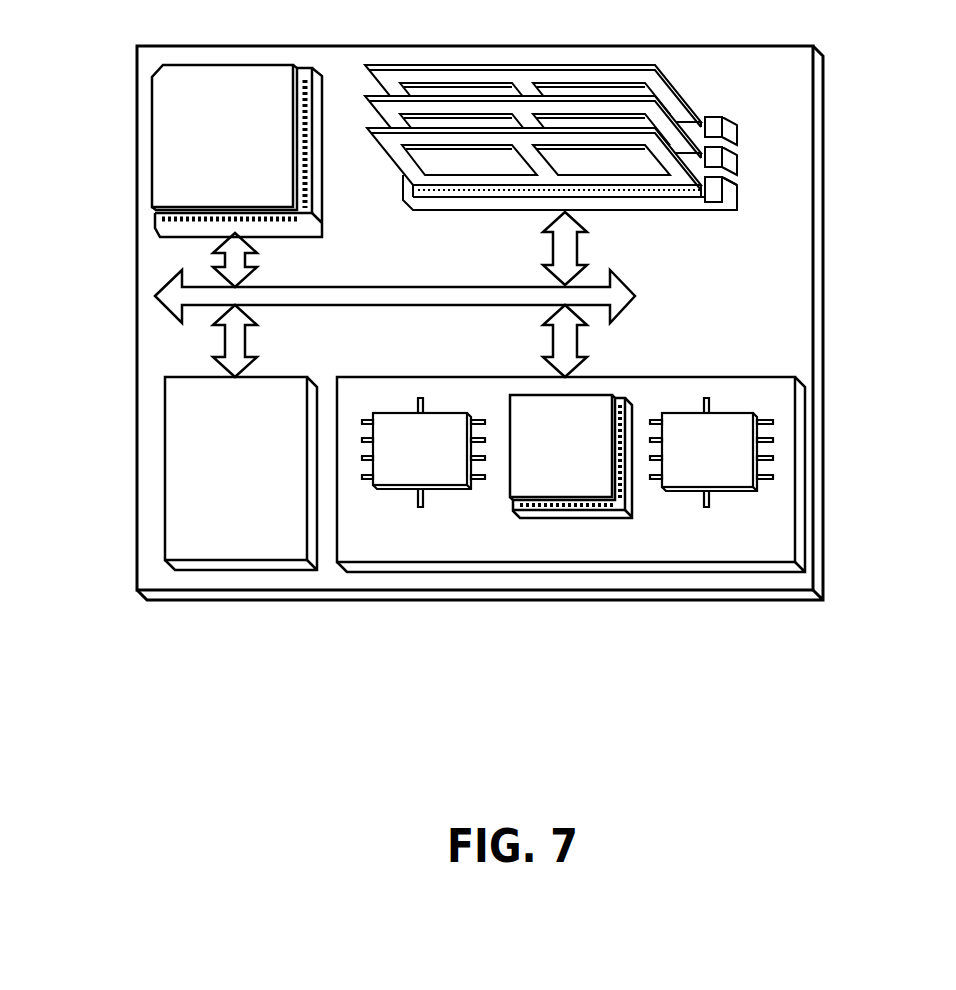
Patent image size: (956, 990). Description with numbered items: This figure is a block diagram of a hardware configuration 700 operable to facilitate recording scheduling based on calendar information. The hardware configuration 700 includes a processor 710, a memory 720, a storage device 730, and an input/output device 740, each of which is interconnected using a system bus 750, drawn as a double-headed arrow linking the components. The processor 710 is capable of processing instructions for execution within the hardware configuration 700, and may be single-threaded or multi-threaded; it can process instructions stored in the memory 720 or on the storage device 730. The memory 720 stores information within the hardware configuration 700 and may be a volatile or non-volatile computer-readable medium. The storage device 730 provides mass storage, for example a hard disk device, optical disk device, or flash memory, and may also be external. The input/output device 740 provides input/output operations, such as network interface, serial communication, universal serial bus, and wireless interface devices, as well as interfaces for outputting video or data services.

The hardware configuration 700 is at (118, 708).
The processor 710 is at (282, 200).
The memory 720 is at (704, 104).
The storage device 730 is at (295, 555).
The input/output device 740 is at (757, 376).
The system bus 750 is at (390, 305).